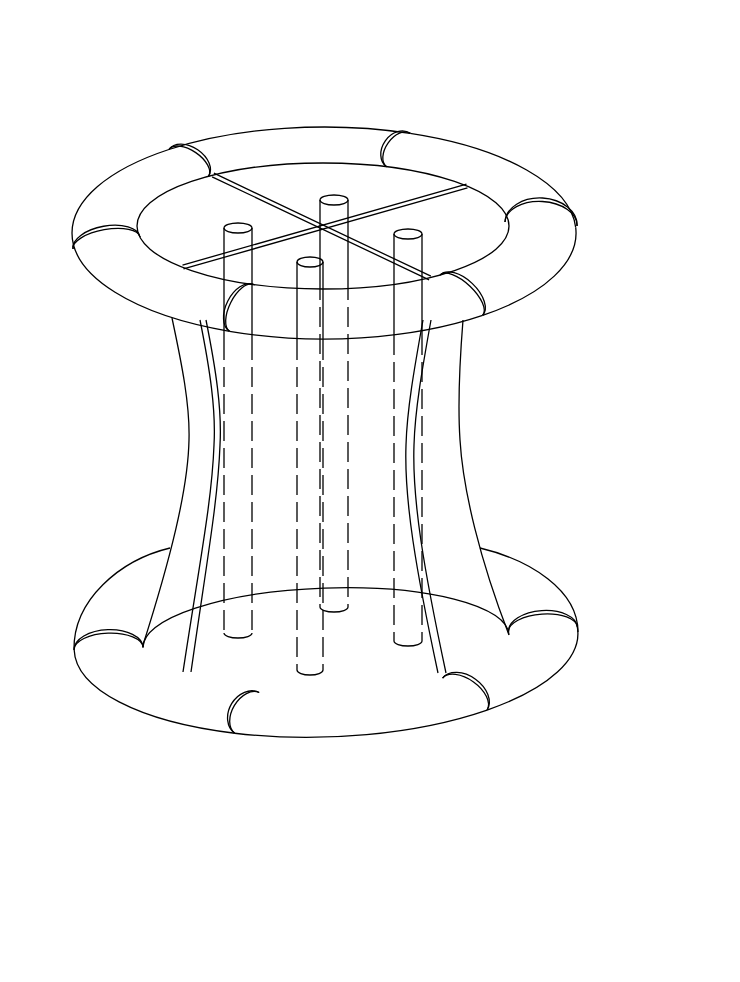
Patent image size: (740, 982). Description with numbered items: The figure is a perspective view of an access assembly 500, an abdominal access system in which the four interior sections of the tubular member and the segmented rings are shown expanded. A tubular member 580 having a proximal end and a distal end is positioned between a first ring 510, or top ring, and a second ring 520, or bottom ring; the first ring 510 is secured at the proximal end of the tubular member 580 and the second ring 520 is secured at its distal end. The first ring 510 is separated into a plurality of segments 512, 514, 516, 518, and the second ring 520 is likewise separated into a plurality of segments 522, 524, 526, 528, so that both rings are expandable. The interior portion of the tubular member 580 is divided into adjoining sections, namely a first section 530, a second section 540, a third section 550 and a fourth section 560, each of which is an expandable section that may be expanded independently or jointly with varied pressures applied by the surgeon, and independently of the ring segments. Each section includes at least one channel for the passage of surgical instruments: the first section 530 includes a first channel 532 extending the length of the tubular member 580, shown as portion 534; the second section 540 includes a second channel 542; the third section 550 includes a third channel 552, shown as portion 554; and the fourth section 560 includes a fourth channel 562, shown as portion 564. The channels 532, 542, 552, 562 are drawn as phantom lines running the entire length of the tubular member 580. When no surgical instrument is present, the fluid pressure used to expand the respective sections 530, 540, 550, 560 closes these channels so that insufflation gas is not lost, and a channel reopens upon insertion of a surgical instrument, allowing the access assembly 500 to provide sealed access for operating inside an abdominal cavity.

The access assembly 500 is at (579, 71).
The first ring 510 is at (592, 231).
The segment 512 is at (479, 148).
The segment 514 is at (292, 129).
The segment 516 is at (130, 165).
The segment 518 is at (106, 289).
The second ring 520 is at (605, 610).
The segment 522 is at (540, 686).
The segment 524 is at (381, 735).
The segment 526 is at (138, 703).
The segment 528 is at (97, 580).
The first section 530 is at (467, 248).
The first channel 532 is at (410, 228).
The portion 534 is at (448, 463).
The second section 540 is at (350, 176).
The second channel 542 is at (316, 210).
The third section 550 is at (191, 200).
The third channel 552 is at (232, 224).
The portion 554 is at (203, 447).
The fourth section 560 is at (372, 277).
The fourth channel 562 is at (300, 257).
The portion 564 is at (282, 637).
The tubular member 580 is at (495, 427).